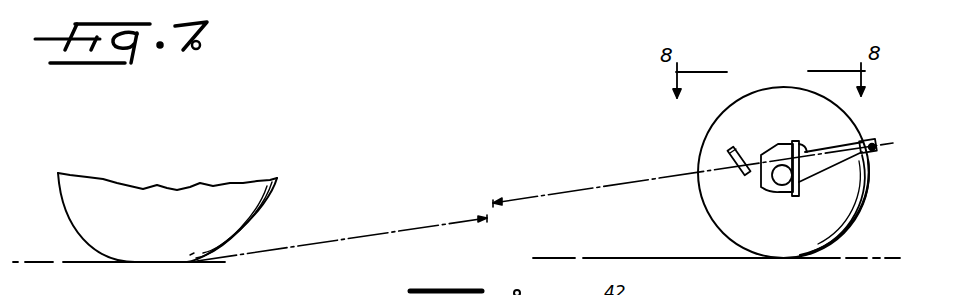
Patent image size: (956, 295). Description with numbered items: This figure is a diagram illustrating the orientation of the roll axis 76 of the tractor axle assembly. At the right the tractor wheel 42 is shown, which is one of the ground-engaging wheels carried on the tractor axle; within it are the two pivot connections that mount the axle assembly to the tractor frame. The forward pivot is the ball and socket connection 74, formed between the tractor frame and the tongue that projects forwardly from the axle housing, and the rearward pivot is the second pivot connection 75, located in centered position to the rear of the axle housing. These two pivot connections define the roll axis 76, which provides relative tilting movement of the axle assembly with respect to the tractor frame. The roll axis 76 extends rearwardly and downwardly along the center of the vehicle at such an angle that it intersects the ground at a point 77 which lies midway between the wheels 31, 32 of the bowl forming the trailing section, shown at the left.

The wheel 31 is at (147, 145).
The wheel 32 is at (89, 162).
The point 77 is at (203, 263).
The wheel 42 is at (712, 212).
The second pivot connection 75 is at (758, 152).
The roll axis 76 is at (812, 147).
The ball and socket connection 74 is at (871, 141).